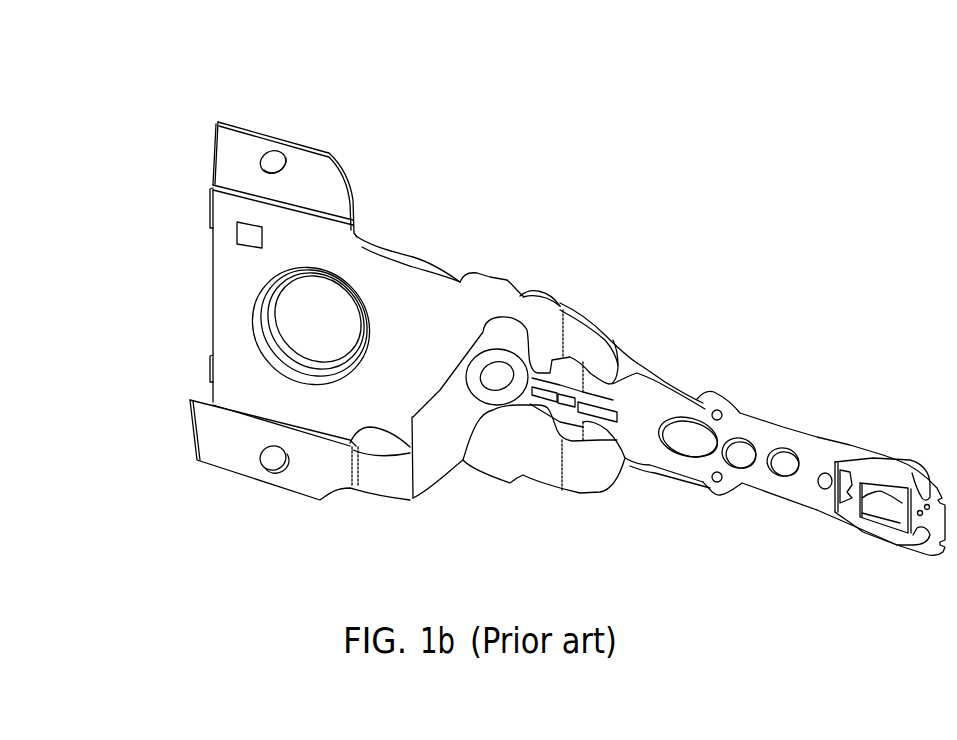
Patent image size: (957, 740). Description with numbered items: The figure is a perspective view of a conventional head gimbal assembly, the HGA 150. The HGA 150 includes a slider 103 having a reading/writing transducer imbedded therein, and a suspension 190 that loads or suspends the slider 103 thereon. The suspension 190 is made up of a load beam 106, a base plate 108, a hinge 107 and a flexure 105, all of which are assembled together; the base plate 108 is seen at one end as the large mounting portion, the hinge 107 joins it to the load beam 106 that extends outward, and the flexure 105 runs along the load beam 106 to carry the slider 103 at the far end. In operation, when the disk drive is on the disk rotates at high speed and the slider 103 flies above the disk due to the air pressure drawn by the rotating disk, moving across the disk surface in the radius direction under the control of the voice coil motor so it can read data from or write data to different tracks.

The HGA 150 is at (135, 83).
The suspension 190 is at (768, 230).
The base plate 108 is at (540, 297).
The hinge 107 is at (575, 328).
The load beam 106 is at (622, 368).
The flexure 105 is at (748, 432).
The slider 103 is at (878, 510).